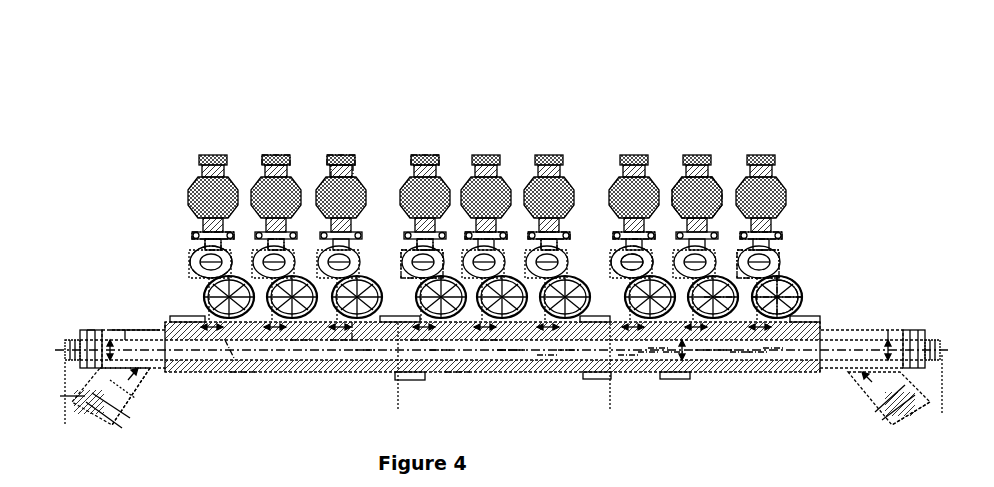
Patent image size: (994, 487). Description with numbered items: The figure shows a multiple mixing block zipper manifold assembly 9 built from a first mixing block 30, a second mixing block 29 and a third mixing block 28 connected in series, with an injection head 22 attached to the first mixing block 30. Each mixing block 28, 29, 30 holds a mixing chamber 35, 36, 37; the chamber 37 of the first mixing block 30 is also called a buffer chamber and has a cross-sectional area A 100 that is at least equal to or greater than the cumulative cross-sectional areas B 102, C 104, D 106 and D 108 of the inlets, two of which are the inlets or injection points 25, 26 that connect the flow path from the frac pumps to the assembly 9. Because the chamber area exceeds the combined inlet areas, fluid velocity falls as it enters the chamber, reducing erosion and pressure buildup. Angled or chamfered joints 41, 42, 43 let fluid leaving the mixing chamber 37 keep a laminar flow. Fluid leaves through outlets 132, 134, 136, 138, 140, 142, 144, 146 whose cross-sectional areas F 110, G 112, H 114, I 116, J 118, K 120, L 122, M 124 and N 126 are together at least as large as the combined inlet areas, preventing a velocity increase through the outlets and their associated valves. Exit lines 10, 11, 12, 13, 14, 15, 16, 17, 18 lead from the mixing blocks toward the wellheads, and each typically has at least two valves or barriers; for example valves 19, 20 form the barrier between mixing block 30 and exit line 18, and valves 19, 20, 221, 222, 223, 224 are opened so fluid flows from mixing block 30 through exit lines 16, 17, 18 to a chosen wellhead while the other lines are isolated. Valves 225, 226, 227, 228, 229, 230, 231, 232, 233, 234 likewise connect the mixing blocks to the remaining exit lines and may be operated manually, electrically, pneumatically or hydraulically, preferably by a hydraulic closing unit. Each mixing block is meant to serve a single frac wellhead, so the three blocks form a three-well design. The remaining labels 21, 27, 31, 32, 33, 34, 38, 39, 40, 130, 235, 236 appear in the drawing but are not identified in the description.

The multiple mixing block zipper manifold assembly 9 is at (847, 125).
The exit line 10 is at (213, 142).
The exit line 11 is at (276, 142).
The exit line 12 is at (341, 142).
The exit line 13 is at (425, 142).
The exit line 14 is at (486, 142).
The exit line 15 is at (549, 142).
The exit line 16 is at (634, 142).
The exit line 17 is at (697, 142).
The exit line 18 is at (761, 142).
The valve 19 is at (786, 250).
The valve 20 is at (800, 285).
The hand wheel spoke 21 is at (792, 306).
The injection head 22 is at (900, 330).
The inlet 25 is at (70, 401).
The inlet 26 is at (59, 350).
The manifold body 27 is at (116, 292).
The third mixing block 28 is at (243, 374).
The second mixing block 29 is at (490, 345).
The first mixing block 30 is at (740, 352).
The inlet section 31 is at (125, 330).
The branch wall 32 is at (155, 372).
The outlet branch wall 33 is at (884, 395).
The outlet axis 34 is at (918, 405).
The mixing chamber 35 is at (232, 352).
The mixing chamber 36 is at (457, 374).
The buffer chamber 37 is at (648, 352).
The bore wall 38 is at (658, 348).
The port wall 39 is at (725, 350).
The bore end 40 is at (757, 352).
The chamfered joint 41 is at (628, 355).
The chamfered joint 42 is at (705, 350).
The chamfered joint 43 is at (773, 348).
The cross-sectional area A 100 is at (673, 352).
The cross-sectional area B 102 is at (870, 388).
The cross-sectional area C 104 is at (889, 330).
The cross-sectional area D 106 is at (118, 396).
The cross-sectional area D 108 is at (90, 330).
The cross-sectional area F 110 is at (192, 245).
The cross-sectional area G 112 is at (252, 250).
The cross-sectional area H 114 is at (330, 238).
The cross-sectional area I 116 is at (410, 272).
The cross-sectional area J 118 is at (455, 250).
The cross-sectional area K 120 is at (535, 250).
The cross-sectional area L 122 is at (617, 240).
The cross-sectional area M 124 is at (728, 288).
The cross-sectional area N 126 is at (797, 283).
The valve body 130 is at (207, 250).
The outlet 132 is at (298, 235).
The outlet 134 is at (352, 215).
The outlet 136 is at (408, 232).
The outlet 138 is at (470, 232).
The outlet 140 is at (562, 238).
The outlet 142 is at (640, 262).
The outlet 144 is at (732, 283).
The outlet 146 is at (802, 297).
The valve 221 is at (723, 192).
The valve 222 is at (778, 236).
The valve 223 is at (625, 265).
The valve 224 is at (658, 275).
The valve 225 is at (568, 350).
The valve 226 is at (547, 355).
The valve 227 is at (512, 350).
The valve 228 is at (507, 352).
The valve 229 is at (440, 350).
The valve 230 is at (420, 345).
The valve 231 is at (365, 345).
The valve 232 is at (352, 340).
The valve 233 is at (342, 348).
The valve 234 is at (300, 345).
The actuator ring 235 is at (210, 262).
The hand wheel 236 is at (205, 296).